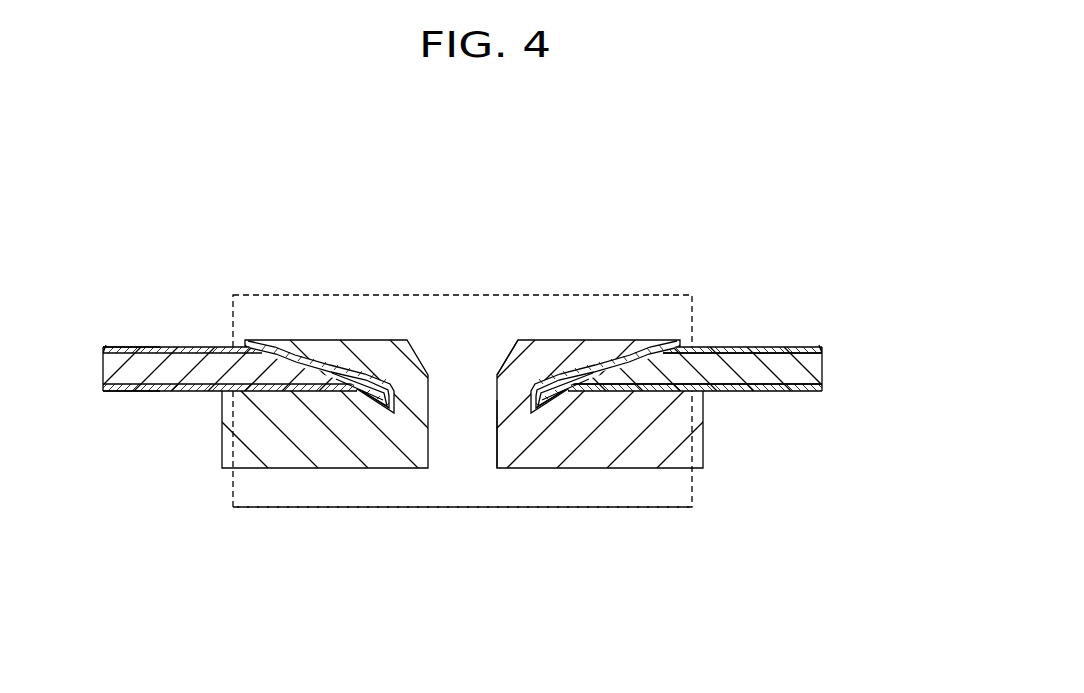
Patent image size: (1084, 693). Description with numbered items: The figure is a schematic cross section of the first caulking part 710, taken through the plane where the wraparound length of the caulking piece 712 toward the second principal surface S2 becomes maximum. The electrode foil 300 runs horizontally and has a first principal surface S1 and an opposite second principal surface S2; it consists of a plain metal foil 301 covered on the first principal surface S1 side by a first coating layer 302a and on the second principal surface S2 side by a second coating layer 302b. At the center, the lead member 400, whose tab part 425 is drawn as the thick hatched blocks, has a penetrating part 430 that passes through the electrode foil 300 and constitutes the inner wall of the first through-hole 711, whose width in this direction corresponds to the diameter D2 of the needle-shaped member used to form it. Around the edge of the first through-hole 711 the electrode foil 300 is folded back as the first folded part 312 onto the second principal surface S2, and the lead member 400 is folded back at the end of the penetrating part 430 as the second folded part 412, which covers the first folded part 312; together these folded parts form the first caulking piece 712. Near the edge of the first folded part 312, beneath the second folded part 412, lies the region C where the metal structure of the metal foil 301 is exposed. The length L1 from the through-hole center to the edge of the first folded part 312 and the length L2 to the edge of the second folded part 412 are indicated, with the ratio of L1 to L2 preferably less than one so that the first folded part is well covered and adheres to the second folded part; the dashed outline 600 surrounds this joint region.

The electrode foil 300 is at (488, 430).
The metal foil 301 is at (750, 378).
The first coating layer 302a is at (787, 392).
The second coating layer 302b is at (733, 473).
The first folded part 312 is at (376, 356).
The lead member 400 is at (433, 421).
The tab part 425 is at (257, 431).
The second folded part 412 is at (317, 351).
The penetrating part 430 is at (507, 400).
The sealing region 600 is at (592, 483).
The first caulking part 710 is at (658, 513).
The first through-hole 711 is at (483, 453).
The first caulking piece 712 is at (463, 298).
The region C is at (341, 358).
The first principal surface S1 is at (142, 393).
The second principal surface S2 is at (143, 338).
The diameter of needle-shaped member D2 is at (497, 302).
The length L1 is at (335, 362).
The length L2 is at (244, 330).